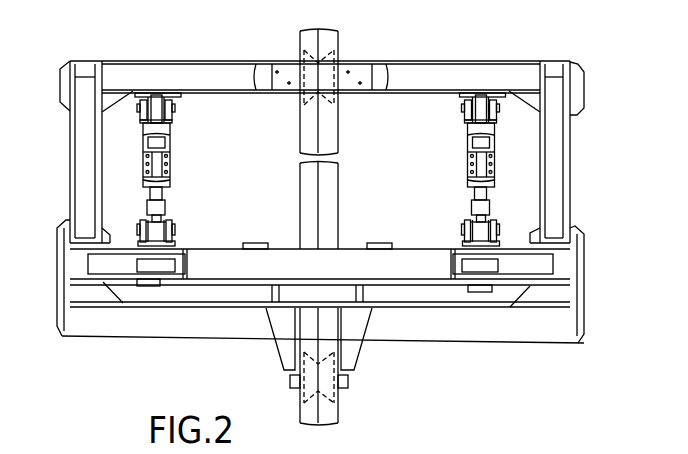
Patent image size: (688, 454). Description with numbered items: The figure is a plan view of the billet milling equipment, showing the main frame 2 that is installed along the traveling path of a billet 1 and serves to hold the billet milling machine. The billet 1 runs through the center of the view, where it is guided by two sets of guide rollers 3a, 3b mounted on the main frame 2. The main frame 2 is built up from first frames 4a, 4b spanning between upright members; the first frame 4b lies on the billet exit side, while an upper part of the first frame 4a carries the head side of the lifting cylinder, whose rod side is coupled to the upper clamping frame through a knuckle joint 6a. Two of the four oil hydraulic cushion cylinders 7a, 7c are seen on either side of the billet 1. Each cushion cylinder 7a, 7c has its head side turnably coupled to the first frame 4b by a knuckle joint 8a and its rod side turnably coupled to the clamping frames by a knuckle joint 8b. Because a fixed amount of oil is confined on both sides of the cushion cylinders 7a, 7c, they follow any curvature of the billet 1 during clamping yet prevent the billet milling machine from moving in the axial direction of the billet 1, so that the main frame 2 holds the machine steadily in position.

The billet 1 is at (340, 33).
The main frame 2 is at (586, 131).
The guide roller 3a is at (325, 392).
The guide roller 3b is at (338, 55).
The first frame 4a is at (425, 272).
The first frame 4b is at (527, 77).
The knuckle joint 6a is at (147, 266).
The oil hydraulic cushion cylinder 7a is at (143, 178).
The oil hydraulic cushion cylinder 7c is at (496, 175).
The knuckle joint 8a is at (183, 108).
The knuckle joint 8b is at (174, 223).